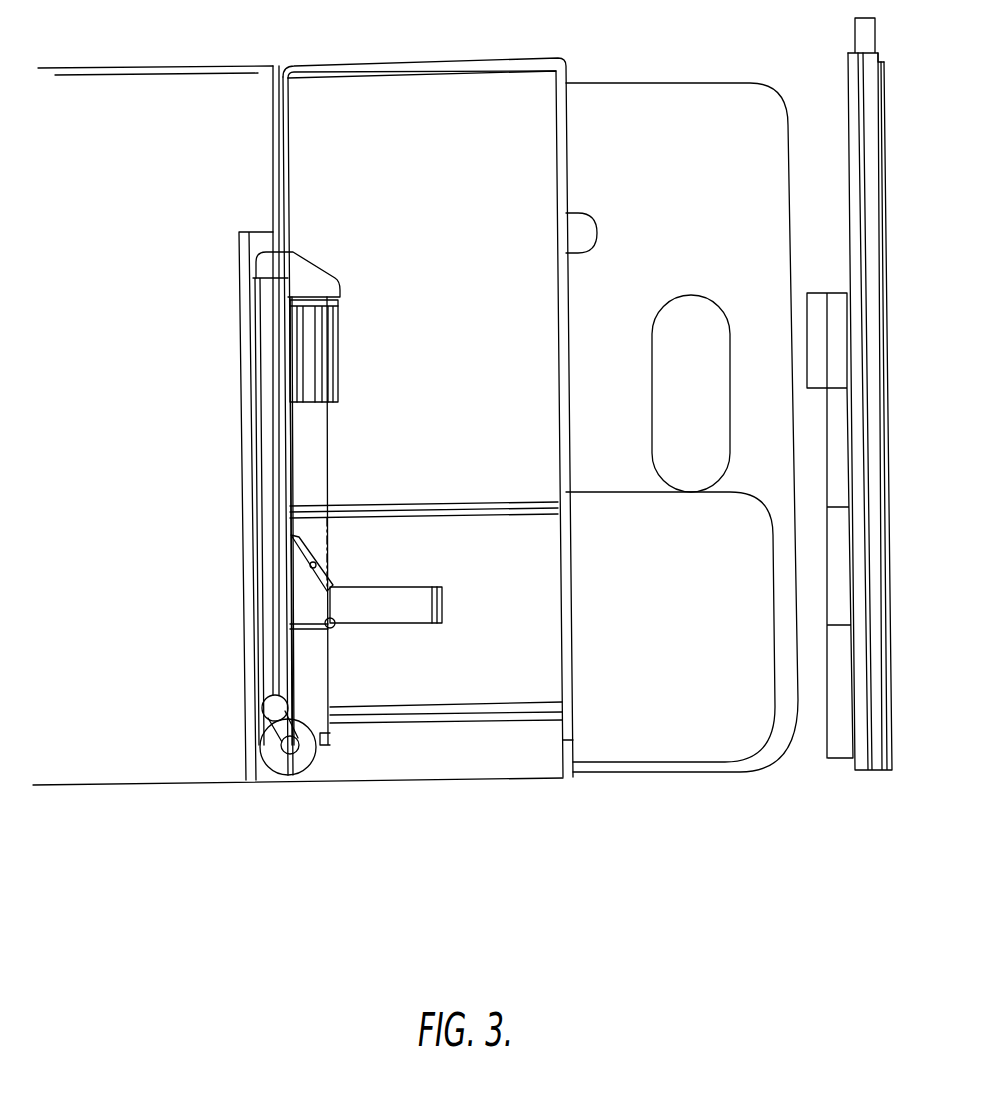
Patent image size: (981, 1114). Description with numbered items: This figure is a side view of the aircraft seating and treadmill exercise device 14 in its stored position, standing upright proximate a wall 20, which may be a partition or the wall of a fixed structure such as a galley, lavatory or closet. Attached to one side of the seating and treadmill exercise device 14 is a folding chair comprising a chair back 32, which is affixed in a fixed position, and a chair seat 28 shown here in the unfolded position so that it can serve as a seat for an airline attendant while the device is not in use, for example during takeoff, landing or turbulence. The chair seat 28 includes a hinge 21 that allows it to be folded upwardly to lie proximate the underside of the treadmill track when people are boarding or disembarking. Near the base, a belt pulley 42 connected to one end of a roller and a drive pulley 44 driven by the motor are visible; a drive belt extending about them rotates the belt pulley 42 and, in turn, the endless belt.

The wall 20 is at (288, 157).
The seating and treadmill exercise device 14 is at (348, 375).
The chair back 32 is at (328, 488).
The chair seat 28 is at (382, 600).
The hinge 21 is at (334, 627).
The belt pulley 42 is at (273, 710).
The drive pulley 44 is at (290, 748).